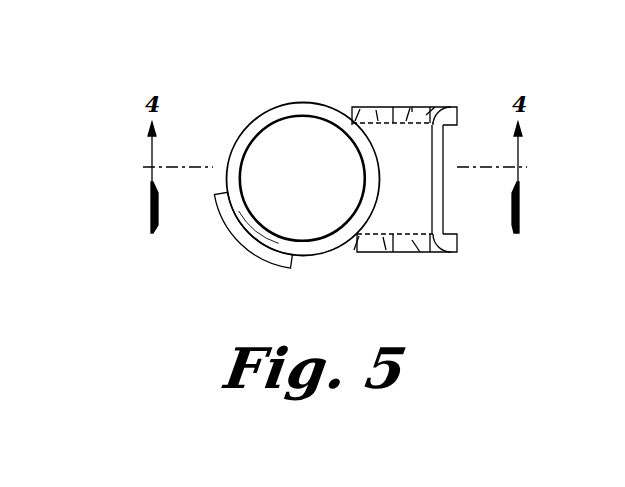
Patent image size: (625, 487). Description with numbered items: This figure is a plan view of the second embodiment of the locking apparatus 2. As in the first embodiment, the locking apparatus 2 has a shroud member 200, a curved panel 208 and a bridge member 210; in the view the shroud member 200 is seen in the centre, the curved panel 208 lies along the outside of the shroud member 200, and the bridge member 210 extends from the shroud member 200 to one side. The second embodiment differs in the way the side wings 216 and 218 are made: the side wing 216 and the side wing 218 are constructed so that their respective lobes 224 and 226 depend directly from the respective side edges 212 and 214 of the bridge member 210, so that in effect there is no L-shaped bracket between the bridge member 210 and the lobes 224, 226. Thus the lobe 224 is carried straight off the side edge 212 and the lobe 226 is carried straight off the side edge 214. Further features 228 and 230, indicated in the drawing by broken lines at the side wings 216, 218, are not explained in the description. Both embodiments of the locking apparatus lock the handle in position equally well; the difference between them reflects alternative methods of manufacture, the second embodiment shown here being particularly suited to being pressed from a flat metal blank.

The locking apparatus 2 is at (86, 308).
The shroud member 200 is at (299, 270).
The curved panel 208 is at (224, 238).
The bridge member 210 is at (411, 178).
The side edge 212 is at (421, 241).
The side edge 214 is at (426, 115).
The side wing 216 is at (412, 241).
The side wing 218 is at (412, 107).
The lobe 224 is at (358, 252).
The lobe 226 is at (352, 107).
The lower slot 228 is at (383, 254).
The upper slot 230 is at (368, 107).